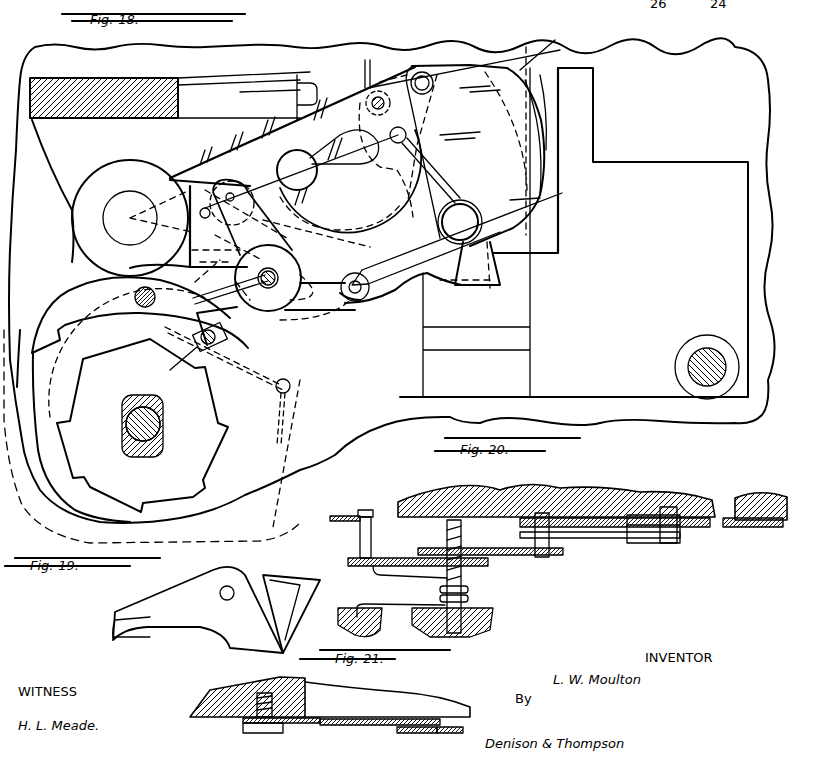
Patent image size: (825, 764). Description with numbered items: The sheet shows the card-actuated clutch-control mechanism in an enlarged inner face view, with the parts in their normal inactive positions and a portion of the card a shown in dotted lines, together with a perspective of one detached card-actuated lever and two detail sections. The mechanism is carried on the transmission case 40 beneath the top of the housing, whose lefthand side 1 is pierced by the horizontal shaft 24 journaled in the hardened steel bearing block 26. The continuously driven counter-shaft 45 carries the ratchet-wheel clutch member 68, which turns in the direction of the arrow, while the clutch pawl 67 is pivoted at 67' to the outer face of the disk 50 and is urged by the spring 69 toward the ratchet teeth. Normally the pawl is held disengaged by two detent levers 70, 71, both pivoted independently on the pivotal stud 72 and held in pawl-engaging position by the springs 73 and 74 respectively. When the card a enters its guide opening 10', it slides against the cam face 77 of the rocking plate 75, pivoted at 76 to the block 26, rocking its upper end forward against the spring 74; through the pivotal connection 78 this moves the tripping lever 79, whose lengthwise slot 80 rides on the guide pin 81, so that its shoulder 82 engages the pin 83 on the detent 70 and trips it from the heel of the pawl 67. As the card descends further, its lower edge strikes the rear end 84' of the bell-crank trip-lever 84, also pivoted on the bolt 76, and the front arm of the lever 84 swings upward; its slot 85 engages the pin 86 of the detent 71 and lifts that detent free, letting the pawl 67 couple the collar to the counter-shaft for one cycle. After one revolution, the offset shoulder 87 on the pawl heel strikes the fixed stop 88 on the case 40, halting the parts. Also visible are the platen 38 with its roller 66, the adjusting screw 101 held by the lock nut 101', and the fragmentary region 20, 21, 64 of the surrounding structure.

In FIG. 18, the lefthand side of the housing 1 is at (389, 232).
In FIG. 18, the guide opening 10' is at (546, 141).
In FIG. 20, the guide opening 10' is at (720, 497).
In FIG. 18, the base plate 20 is at (558, 196).
In FIG. 18, the slot edge 21 is at (413, 160).
In FIG. 18, the horizontal shaft 24 is at (708, 352).
In FIG. 18, the bearing block 26 is at (558, 232).
In FIG. 20, the bearing block 26 is at (622, 495).
In FIG. 21, the bearing block 26 is at (215, 712).
In FIG. 18, the movable platen support 38 is at (125, 120).
In FIG. 18, the transmission case 40 is at (293, 473).
In FIG. 20, the transmission case 40 is at (493, 624).
In FIG. 18, the counter-shaft 45 is at (122, 430).
In FIG. 18, the disk 50 is at (275, 523).
In FIG. 18, the guide 64 is at (540, 112).
In FIG. 18, the roller 66 is at (132, 218).
In FIG. 18, the clutch pawl 67 is at (140, 309).
In FIG. 18, the pawl pivot 67' is at (130, 297).
In FIG. 18, the clutch member 68 is at (178, 420).
In FIG. 18, the spring 69 is at (243, 365).
In FIG. 18, the detent lever 70 is at (257, 305).
In FIG. 20, the detent lever 70 is at (395, 558).
In FIG. 18, the detent lever 71 is at (310, 296).
In FIG. 20, the detent lever 71 is at (508, 556).
In FIG. 18, the pivotal stud 72 is at (268, 278).
In FIG. 20, the pivotal stud 72 is at (462, 575).
In FIG. 18, the spring 73 is at (221, 269).
In FIG. 20, the spring 73 is at (415, 610).
In FIG. 18, the spring 74 is at (435, 165).
In FIG. 20, the spring 74 is at (600, 538).
In FIG. 18, the rocking plate 75 is at (462, 155).
In FIG. 20, the rocking plate 75 is at (702, 528).
In FIG. 21, the rocking plate 75 is at (452, 733).
In FIG. 18, the pivot 76 is at (462, 215).
In FIG. 20, the pivot 76 is at (668, 545).
In FIG. 18, the cam face 77 is at (540, 150).
In FIG. 20, the cam face 77 is at (745, 528).
In FIG. 18, the pivotal connection 78 is at (424, 72).
In FIG. 21, the pivotal connection 78 is at (414, 733).
In FIG. 18, the tripping lever 79 is at (346, 160).
In FIG. 20, the tripping lever 79 is at (347, 514).
In FIG. 21, the tripping lever 79 is at (350, 726).
In FIG. 18, the lengthwise slot 80 is at (368, 170).
In FIG. 21, the lengthwise slot 80 is at (302, 724).
In FIG. 18, the guide pin 81 is at (293, 158).
In FIG. 21, the guide pin 81 is at (265, 728).
In FIG. 18, the shoulder 82 is at (232, 190).
In FIG. 18, the pin 83 is at (222, 205).
In FIG. 20, the pin 83 is at (358, 537).
In FIG. 18, the trip-lever 84 is at (371, 296).
In FIG. 19, the trip-lever 84 is at (198, 612).
In FIG. 20, the trip-lever 84 is at (651, 537).
In FIG. 18, the rear end of trip-lever 84' is at (497, 265).
In FIG. 19, the rear end of trip-lever 84' is at (291, 603).
In FIG. 18, the slot 85 is at (368, 300).
In FIG. 19, the slot 85 is at (115, 637).
In FIG. 20, the slot 85 is at (572, 497).
In FIG. 18, the pin 86 is at (352, 300).
In FIG. 20, the pin 86 is at (544, 558).
In FIG. 18, the offset shoulder 87 is at (228, 341).
In FIG. 18, the fixed stop 88 is at (173, 362).
In FIG. 18, the adjusting screw 101 is at (330, 93).
In FIG. 18, the lock nut 101' is at (336, 67).
In FIG. 18, the card a is at (541, 48).